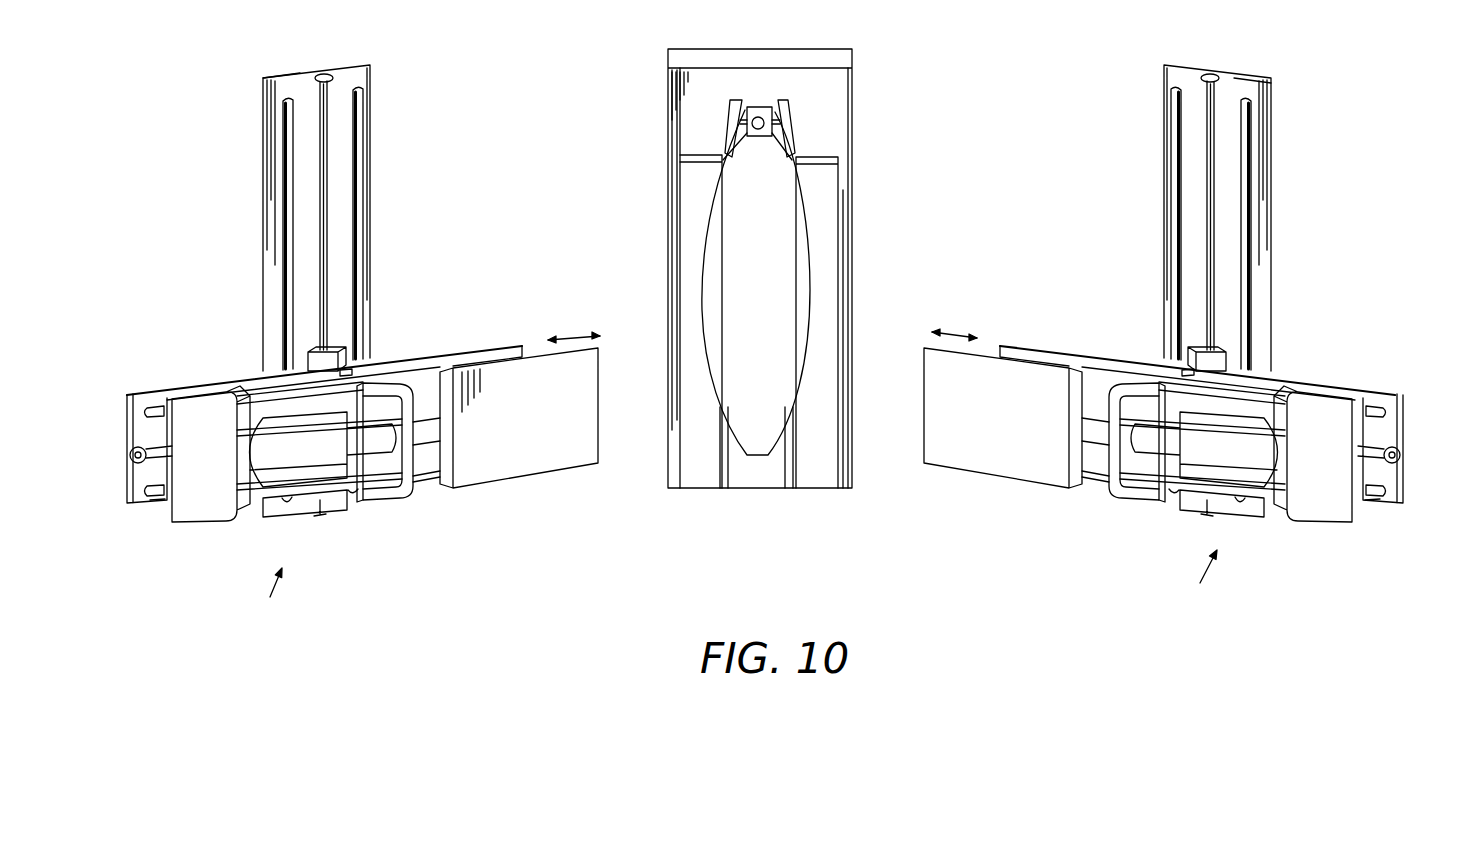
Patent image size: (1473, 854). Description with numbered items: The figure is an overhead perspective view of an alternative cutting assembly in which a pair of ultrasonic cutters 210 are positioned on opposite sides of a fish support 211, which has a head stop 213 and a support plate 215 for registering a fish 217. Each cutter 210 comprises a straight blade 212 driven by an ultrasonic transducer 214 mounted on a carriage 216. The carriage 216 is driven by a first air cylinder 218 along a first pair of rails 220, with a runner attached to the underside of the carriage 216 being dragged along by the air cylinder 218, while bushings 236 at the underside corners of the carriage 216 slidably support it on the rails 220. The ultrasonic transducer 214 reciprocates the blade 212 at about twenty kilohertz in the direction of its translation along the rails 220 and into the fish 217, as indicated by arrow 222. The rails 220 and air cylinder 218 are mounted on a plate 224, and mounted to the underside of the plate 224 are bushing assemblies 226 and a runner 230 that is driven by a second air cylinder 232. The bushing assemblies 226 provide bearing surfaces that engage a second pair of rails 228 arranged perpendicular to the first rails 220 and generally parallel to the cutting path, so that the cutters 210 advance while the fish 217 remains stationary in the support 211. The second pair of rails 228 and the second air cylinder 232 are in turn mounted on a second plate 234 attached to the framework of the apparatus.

The ultrasonic cutter 210 is at (721, 596).
The fish support 211 is at (840, 105).
The straight blade 212 is at (563, 456).
The head stop 213 is at (745, 108).
The ultrasonic transducer 214 is at (333, 468).
The support plate 215 is at (767, 482).
The carriage 216 is at (200, 503).
The fish 217 is at (797, 263).
The first air cylinder 218 is at (153, 457).
The first pair of rails 220 is at (153, 405).
The arrow 222 is at (577, 338).
The plate 224 is at (505, 346).
The bushing assemblies 226 is at (273, 373).
The second pair of rails 228 is at (287, 128).
The runner 230 is at (350, 362).
The second air cylinder 232 is at (335, 90).
The second plate 234 is at (297, 78).
The bushings 236 is at (360, 367).